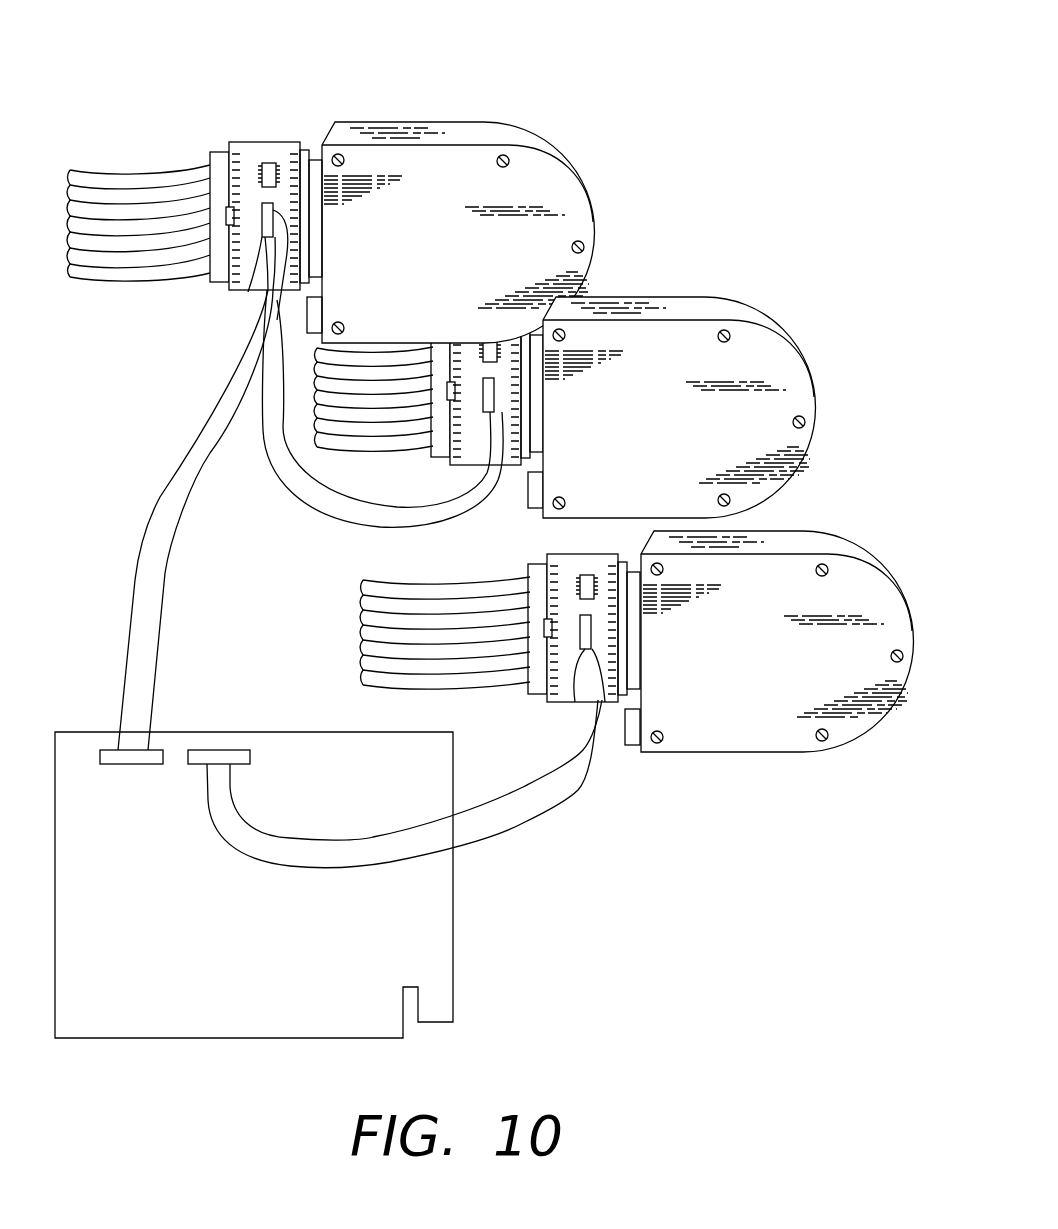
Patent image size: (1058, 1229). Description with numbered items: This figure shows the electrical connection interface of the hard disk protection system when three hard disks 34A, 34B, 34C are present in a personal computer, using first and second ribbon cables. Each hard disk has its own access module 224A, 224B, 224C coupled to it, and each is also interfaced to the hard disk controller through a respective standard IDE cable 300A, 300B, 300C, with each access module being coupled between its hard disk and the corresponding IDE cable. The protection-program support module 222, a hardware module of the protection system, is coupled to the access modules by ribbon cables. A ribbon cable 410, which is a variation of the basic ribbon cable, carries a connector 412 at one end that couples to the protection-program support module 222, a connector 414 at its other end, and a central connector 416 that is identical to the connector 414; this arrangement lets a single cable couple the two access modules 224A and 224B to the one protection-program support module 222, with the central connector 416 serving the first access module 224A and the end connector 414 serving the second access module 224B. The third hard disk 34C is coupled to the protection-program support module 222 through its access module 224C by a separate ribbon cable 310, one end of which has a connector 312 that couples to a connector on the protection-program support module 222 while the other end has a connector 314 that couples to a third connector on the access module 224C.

The hard disk 34A is at (430, 165).
The hard disk 34B is at (657, 345).
The hard disk 34C is at (760, 587).
The access module 224A is at (253, 142).
The access module 224B is at (510, 462).
The access module 224C is at (607, 702).
The IDE cable 300A is at (141, 182).
The IDE cable 300B is at (396, 425).
The IDE cable 300C is at (382, 672).
The protection-program support module 222 is at (217, 1010).
The ribbon cable 310 is at (520, 835).
The connector 312 is at (227, 750).
The connector 314 is at (582, 698).
The ribbon cable 410 is at (180, 527).
The connector 412 is at (108, 750).
The connector 414 is at (485, 465).
The central connector 416 is at (255, 288).